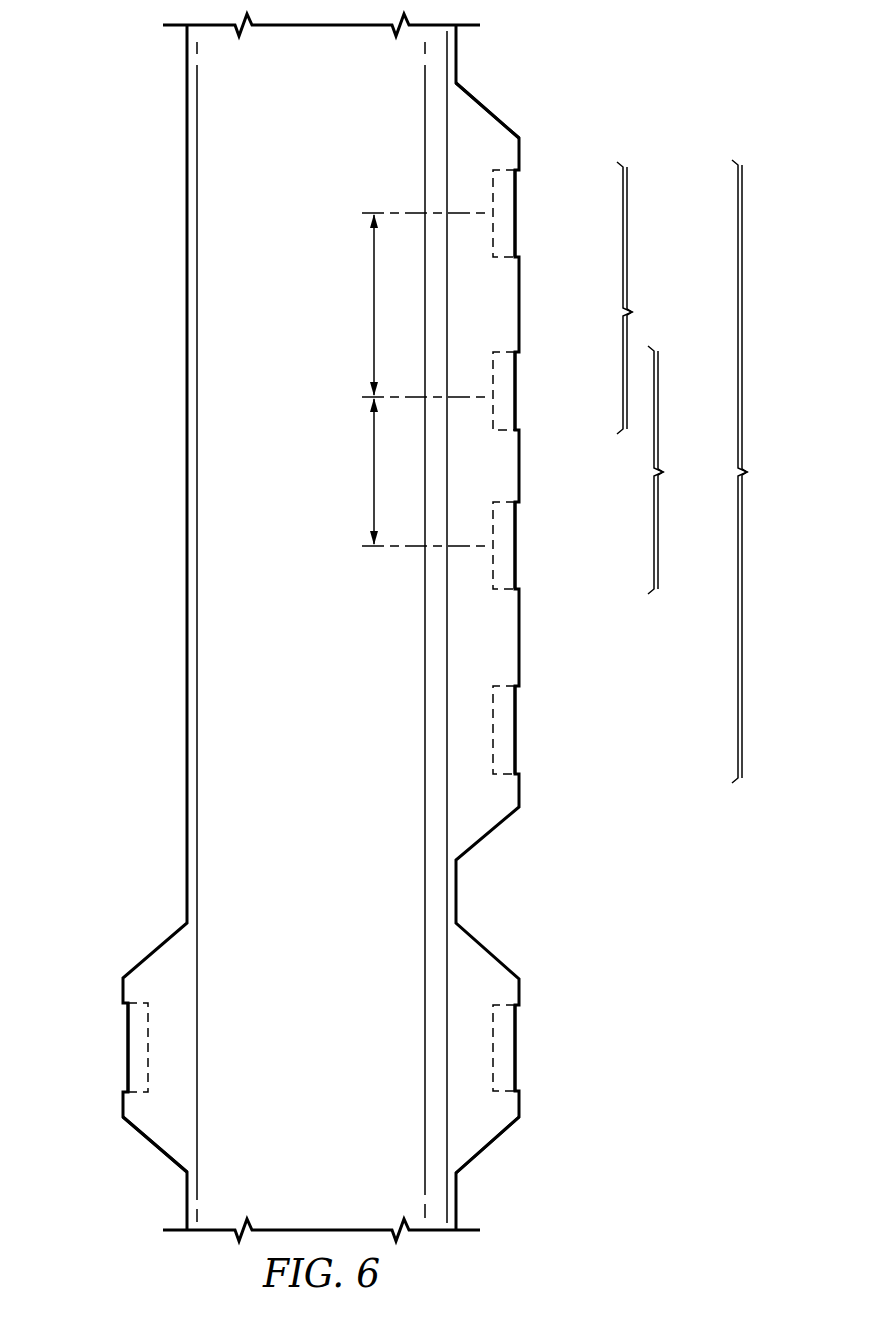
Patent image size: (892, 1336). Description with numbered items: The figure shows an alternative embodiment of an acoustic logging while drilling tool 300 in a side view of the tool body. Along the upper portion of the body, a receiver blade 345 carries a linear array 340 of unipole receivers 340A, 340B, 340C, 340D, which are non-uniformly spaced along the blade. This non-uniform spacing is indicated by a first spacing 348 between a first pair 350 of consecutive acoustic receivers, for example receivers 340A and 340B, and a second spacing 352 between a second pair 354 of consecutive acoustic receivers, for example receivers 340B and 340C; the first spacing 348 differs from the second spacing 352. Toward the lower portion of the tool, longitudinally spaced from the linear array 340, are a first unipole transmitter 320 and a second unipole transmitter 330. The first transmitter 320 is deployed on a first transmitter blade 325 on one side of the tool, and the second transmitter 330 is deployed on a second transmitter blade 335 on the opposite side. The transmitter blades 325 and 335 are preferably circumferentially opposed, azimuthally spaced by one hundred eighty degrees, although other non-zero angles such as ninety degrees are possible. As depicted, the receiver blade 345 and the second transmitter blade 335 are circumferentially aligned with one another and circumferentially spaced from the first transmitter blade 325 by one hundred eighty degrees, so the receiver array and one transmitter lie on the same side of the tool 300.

The acoustic logging while drilling tool 300 is at (690, 109).
The receiver blade 345 is at (487, 108).
The linear array 340 is at (764, 471).
The unipole receiver 340A is at (515, 196).
The unipole receiver 340B is at (515, 382).
The unipole receiver 340C is at (515, 565).
The unipole receiver 340D is at (515, 737).
The first spacing 348 is at (374, 313).
The second spacing 352 is at (374, 462).
The first pair of consecutive acoustic receivers 350 is at (648, 298).
The second pair of consecutive acoustic receivers 354 is at (680, 470).
The first unipole transmitter 320 is at (128, 1048).
The first transmitter blade 325 is at (155, 1150).
The second unipole transmitter 330 is at (515, 1047).
The second transmitter blade 335 is at (490, 1149).